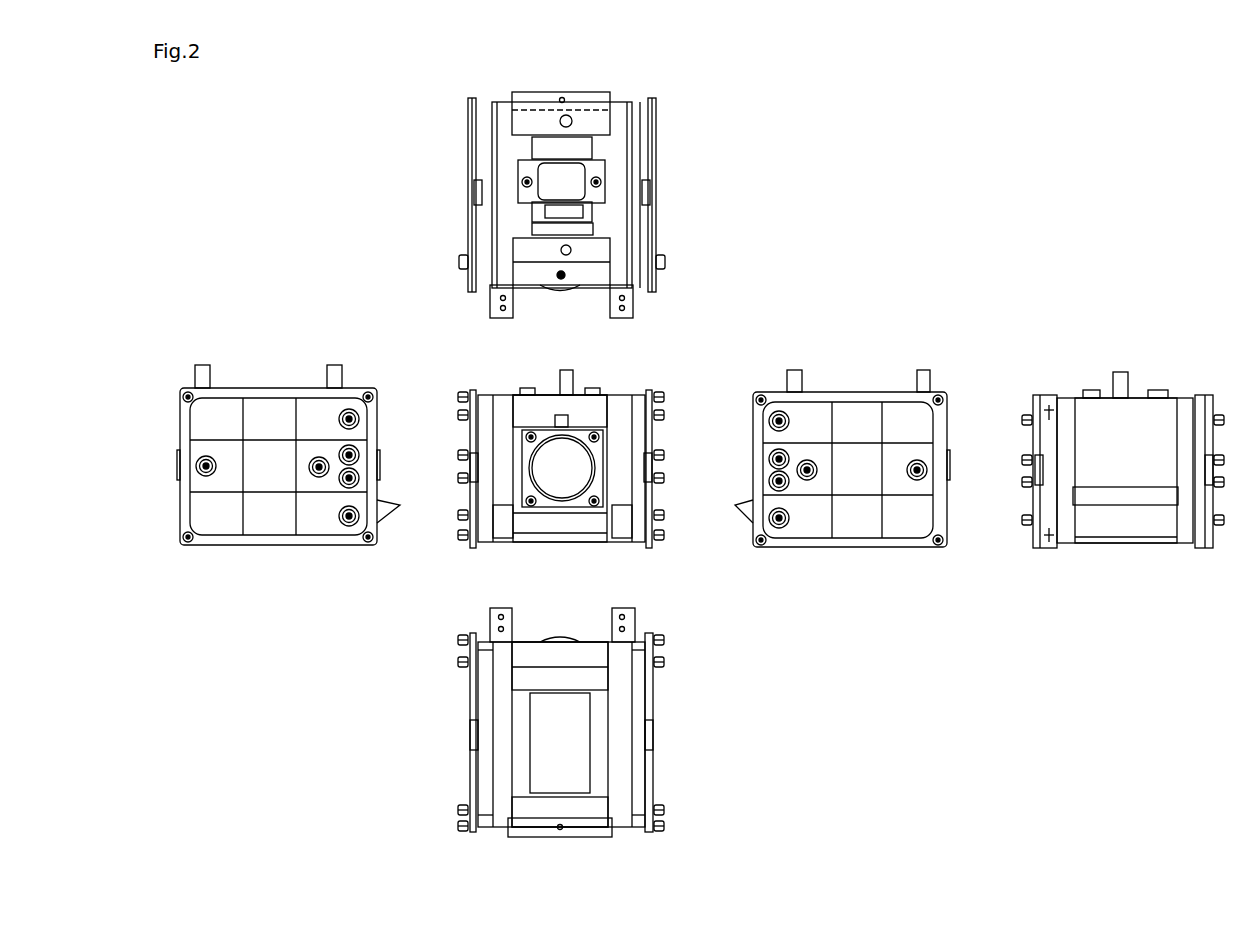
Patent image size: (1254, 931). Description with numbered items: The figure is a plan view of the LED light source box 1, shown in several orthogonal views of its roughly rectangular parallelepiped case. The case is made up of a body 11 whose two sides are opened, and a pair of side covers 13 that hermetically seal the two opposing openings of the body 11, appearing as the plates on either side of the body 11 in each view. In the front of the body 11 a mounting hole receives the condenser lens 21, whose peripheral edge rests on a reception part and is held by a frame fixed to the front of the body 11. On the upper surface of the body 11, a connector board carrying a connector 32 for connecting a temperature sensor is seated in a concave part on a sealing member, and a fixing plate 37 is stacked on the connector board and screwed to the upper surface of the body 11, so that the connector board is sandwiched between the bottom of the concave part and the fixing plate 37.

The LED light source box 1 is at (636, 96).
The body 11 is at (558, 92).
The side covers 13 is at (470, 98).
The condenser lens 21 is at (585, 460).
The connector 32 is at (585, 210).
The fixing plate 37 is at (600, 170).